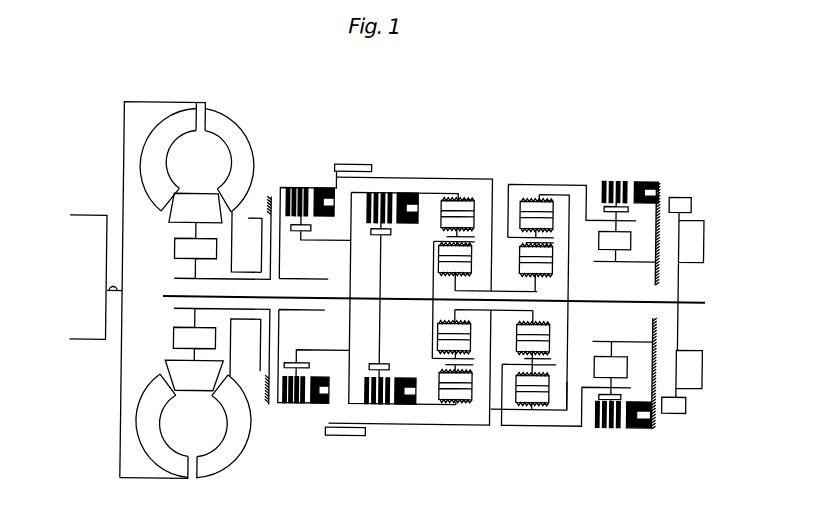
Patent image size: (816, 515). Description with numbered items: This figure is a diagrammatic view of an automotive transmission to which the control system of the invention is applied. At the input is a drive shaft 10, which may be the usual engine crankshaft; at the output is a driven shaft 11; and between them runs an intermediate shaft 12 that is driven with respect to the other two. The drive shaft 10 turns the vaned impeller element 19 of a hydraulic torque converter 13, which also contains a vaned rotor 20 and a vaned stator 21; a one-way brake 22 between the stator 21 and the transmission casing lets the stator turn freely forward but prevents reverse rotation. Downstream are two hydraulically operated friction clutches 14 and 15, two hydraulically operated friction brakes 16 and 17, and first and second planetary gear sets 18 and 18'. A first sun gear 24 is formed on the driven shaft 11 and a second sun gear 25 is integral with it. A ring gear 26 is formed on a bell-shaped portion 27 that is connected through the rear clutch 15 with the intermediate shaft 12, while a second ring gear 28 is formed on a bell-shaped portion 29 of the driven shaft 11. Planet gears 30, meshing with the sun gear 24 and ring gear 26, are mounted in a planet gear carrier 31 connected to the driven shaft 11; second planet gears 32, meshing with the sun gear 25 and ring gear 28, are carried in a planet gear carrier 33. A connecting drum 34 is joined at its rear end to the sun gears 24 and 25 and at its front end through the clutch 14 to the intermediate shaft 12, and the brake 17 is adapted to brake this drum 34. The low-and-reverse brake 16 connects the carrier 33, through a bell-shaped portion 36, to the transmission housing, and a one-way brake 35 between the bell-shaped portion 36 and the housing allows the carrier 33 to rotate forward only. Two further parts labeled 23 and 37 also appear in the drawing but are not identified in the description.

The drive shaft 10 is at (107, 345).
The driven shaft 11 is at (690, 299).
The intermediate shaft 12 is at (287, 299).
The hydraulic torque converter 13 is at (236, 116).
The friction clutch 14 is at (298, 187).
The rear clutch 15 is at (385, 190).
The low-and-reverse brake 16 is at (618, 178).
The friction brake 17 is at (352, 165).
The first planetary gear set 18 is at (464, 297).
The second planetary gear set 18' is at (541, 307).
The vaned impeller element 19 is at (250, 421).
The vaned rotor 20 is at (167, 421).
The vaned stator 21 is at (212, 388).
The one-way brake 22 is at (186, 262).
The pole piece of generator 23 is at (212, 221).
The first sun gear 24 is at (438, 325).
The second sun gear 25 is at (518, 327).
The ring gear 26 is at (463, 400).
The bell-shaped portion 27 is at (446, 196).
The second ring gear 28 is at (530, 405).
The bell-shaped portion 29 is at (568, 410).
The planet gears 30 is at (432, 241).
The planet gear carrier 31 is at (432, 239).
The second planet gears 32 is at (555, 249).
The planet gear carrier 33 is at (520, 402).
The connecting drum 34 is at (421, 178).
The one-way brake 35 is at (631, 250).
The bell-shaped portion 36 is at (560, 182).
The coupling 37 is at (118, 293).